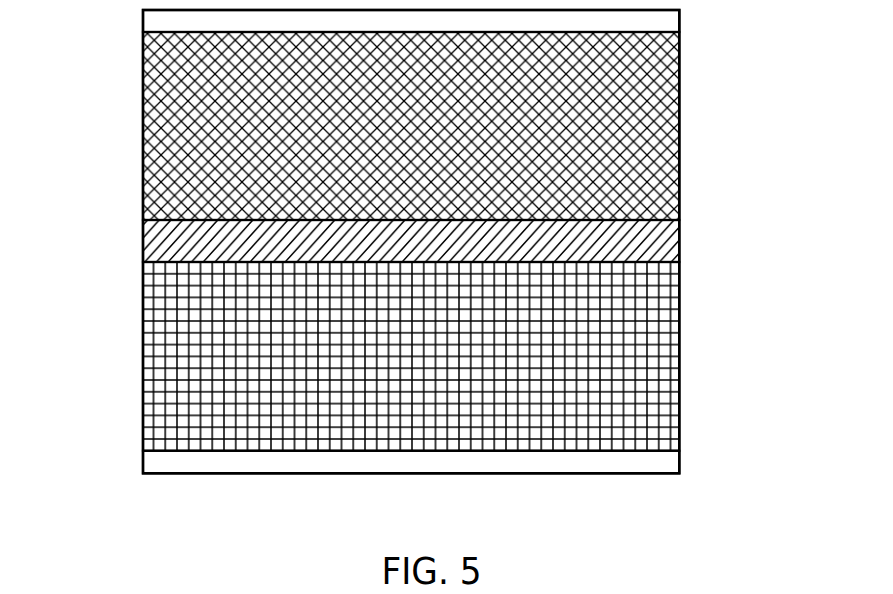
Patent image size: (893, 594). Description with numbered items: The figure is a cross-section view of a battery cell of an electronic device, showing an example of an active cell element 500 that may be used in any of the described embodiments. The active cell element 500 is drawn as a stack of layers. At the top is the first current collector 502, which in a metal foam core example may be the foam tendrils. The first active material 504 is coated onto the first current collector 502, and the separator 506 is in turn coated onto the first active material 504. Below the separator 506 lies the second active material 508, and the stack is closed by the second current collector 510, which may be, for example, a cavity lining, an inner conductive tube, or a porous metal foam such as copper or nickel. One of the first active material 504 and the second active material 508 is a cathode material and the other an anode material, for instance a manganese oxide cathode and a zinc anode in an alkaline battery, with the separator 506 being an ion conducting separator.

The active cell element 500 is at (142, 32).
The first current collector 502 is at (679, 13).
The first active material 504 is at (679, 108).
The separator 506 is at (680, 238).
The second active material 508 is at (680, 350).
The second current collector 510 is at (679, 463).